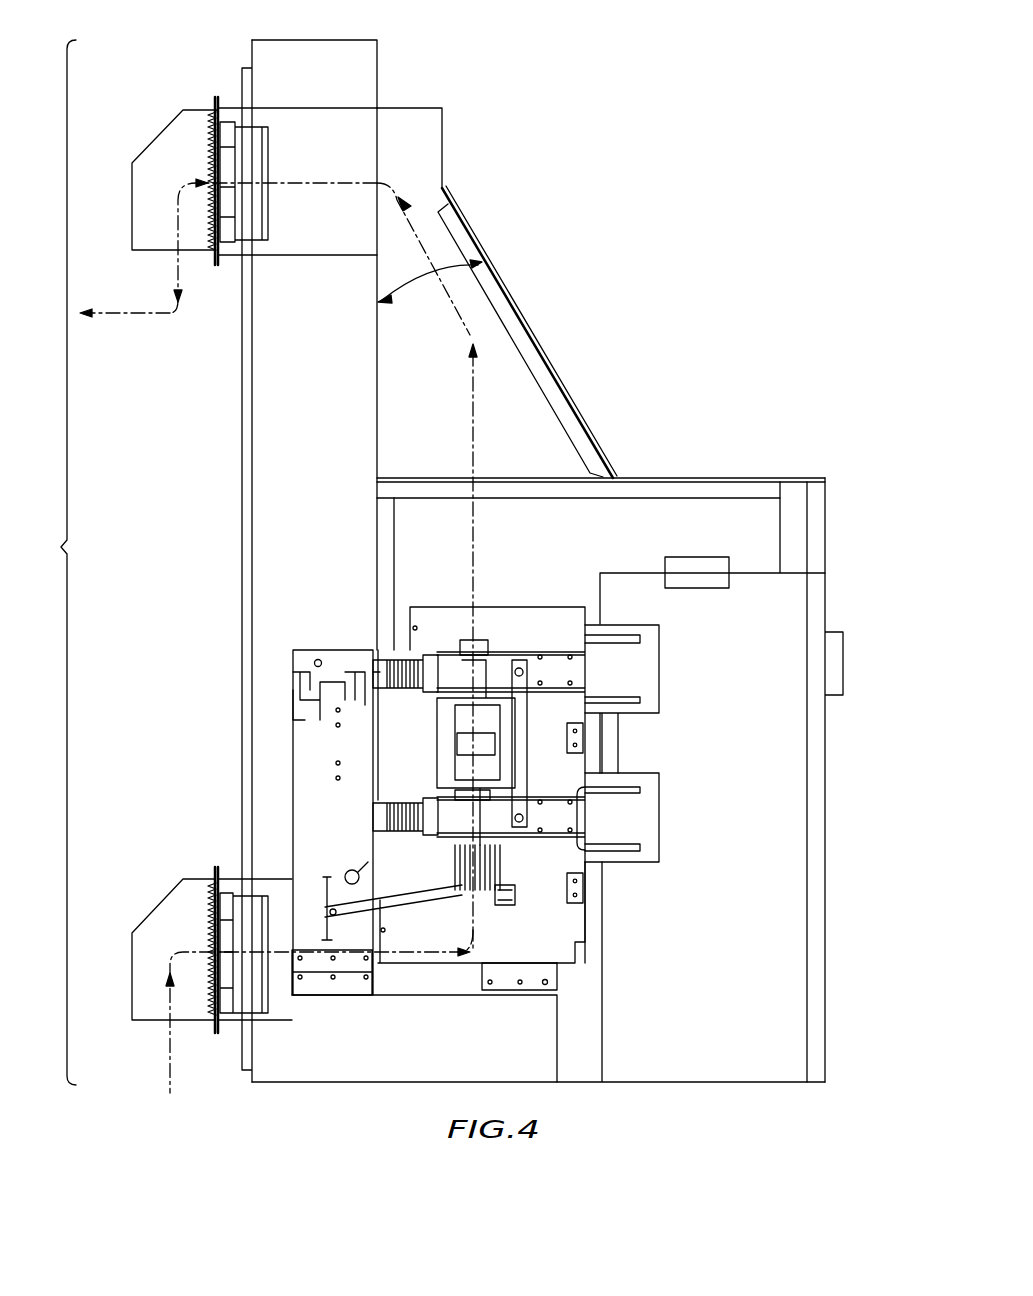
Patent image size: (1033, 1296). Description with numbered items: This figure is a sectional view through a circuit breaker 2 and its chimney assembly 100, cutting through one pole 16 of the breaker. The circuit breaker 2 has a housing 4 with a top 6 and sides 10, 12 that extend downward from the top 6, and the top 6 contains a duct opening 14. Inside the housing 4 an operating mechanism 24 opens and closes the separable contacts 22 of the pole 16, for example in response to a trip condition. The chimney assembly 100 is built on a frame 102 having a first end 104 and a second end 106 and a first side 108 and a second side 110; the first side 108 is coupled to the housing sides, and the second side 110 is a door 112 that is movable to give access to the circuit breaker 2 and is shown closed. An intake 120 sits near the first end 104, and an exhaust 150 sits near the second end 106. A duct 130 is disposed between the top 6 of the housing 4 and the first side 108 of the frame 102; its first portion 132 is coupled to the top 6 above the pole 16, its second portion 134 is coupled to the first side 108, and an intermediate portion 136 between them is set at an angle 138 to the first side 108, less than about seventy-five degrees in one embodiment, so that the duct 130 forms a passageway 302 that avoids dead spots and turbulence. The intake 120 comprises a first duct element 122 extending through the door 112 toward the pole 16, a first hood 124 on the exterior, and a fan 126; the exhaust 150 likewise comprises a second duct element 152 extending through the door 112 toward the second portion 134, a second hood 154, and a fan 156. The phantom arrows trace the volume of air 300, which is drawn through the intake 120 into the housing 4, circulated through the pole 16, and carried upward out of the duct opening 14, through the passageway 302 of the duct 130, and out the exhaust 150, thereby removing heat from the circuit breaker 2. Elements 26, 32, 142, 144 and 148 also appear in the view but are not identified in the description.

The circuit breaker 2 is at (702, 1124).
The housing 4 is at (705, 460).
The top 6 is at (668, 478).
The side 10 is at (711, 932).
The side 12 is at (825, 830).
The duct opening 14 is at (458, 486).
The pole 16 is at (410, 756).
The separable contacts 22 is at (440, 735).
The operating mechanism 24 is at (290, 740).
The lower guide rail 26 is at (630, 852).
The upper guide rail 32 is at (640, 702).
The chimney assembly 100 is at (60, 560).
The frame 102 is at (280, 420).
The first end 104 is at (238, 1080).
The second end 106 is at (252, 46).
The first side 108 is at (388, 80).
The second side 110 is at (243, 340).
The door 112 is at (230, 370).
The intake 120 is at (201, 910).
The first duct element 122 is at (230, 878).
The first hood 124 is at (160, 920).
The fan 126 is at (254, 923).
The duct 130 is at (546, 256).
The first portion 132 is at (531, 493).
The second portion 134 is at (376, 143).
The intermediate portion 136 is at (397, 343).
The angle 138 is at (440, 285).
The door opening 142 is at (529, 444).
The door 144 is at (560, 380).
The door panel 148 is at (540, 337).
The exhaust 150 is at (197, 175).
The second duct element 152 is at (234, 262).
The second hood 154 is at (138, 195).
The fan 156 is at (253, 220).
The volume of air 300 is at (132, 313).
The passageway 302 is at (452, 255).